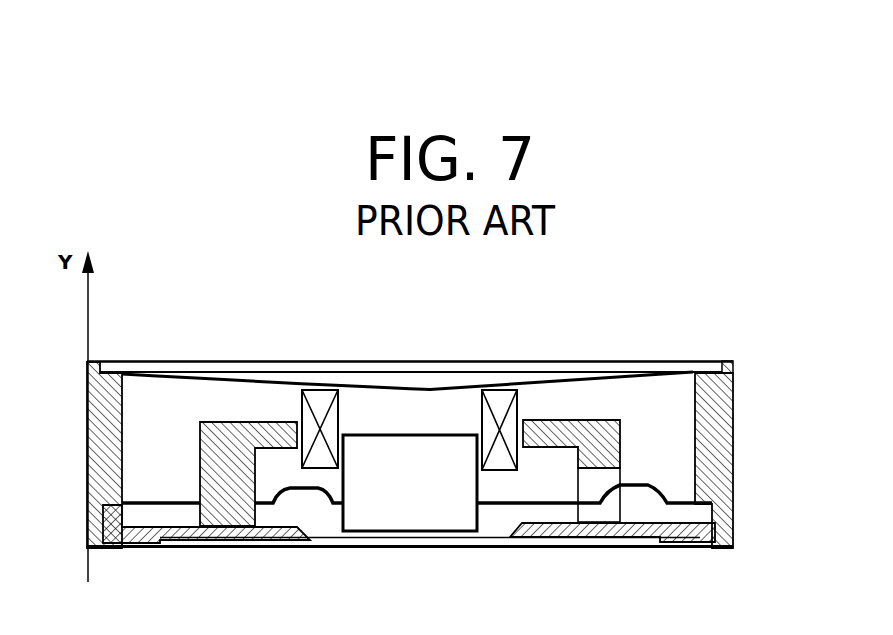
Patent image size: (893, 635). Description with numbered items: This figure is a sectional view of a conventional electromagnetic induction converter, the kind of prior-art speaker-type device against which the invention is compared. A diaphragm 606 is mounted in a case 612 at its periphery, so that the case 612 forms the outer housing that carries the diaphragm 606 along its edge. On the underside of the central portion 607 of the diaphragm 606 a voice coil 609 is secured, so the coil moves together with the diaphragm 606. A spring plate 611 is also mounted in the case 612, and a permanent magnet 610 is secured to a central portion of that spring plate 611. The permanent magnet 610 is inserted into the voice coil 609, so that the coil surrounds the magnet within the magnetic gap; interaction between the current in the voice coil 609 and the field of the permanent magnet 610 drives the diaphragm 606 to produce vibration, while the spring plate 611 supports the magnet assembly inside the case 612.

The diaphragm 606 is at (570, 380).
The central portion 607 is at (432, 390).
The voice coil 609 is at (285, 527).
The permanent magnet 610 is at (378, 462).
The spring plate 611 is at (463, 531).
The case 612 is at (728, 360).